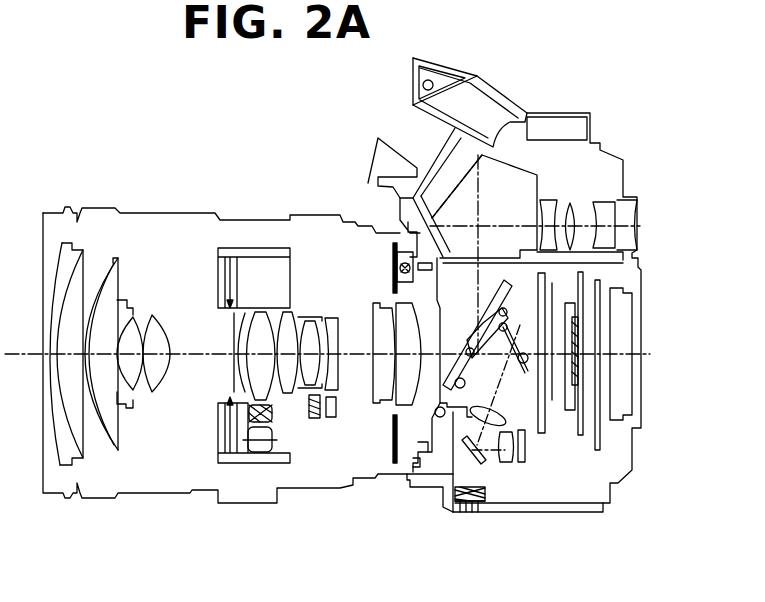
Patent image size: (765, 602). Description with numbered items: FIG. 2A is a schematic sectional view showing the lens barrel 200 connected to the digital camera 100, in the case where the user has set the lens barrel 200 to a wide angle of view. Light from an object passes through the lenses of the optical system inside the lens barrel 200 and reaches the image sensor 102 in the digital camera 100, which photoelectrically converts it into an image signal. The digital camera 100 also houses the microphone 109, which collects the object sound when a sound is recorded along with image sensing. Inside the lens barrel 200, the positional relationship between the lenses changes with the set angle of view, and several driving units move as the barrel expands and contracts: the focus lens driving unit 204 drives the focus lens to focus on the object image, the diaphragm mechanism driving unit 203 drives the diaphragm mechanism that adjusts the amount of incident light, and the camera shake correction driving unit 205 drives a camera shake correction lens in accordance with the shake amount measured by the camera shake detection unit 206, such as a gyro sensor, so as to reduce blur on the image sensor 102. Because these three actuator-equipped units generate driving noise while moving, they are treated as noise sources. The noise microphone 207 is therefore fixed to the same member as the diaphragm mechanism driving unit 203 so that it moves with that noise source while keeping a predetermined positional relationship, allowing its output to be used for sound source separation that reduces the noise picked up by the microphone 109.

The digital camera 100 is at (622, 160).
The image sensor 102 is at (578, 381).
The microphone 109 is at (485, 490).
The lens barrel 200 is at (163, 212).
The diaphragm mechanism driving unit 203 is at (258, 445).
The focus lens driving unit 204 is at (147, 406).
The camera shake correction driving unit 205 is at (272, 417).
The camera shake detection unit 206 is at (402, 252).
The noise microphone 207 is at (313, 423).